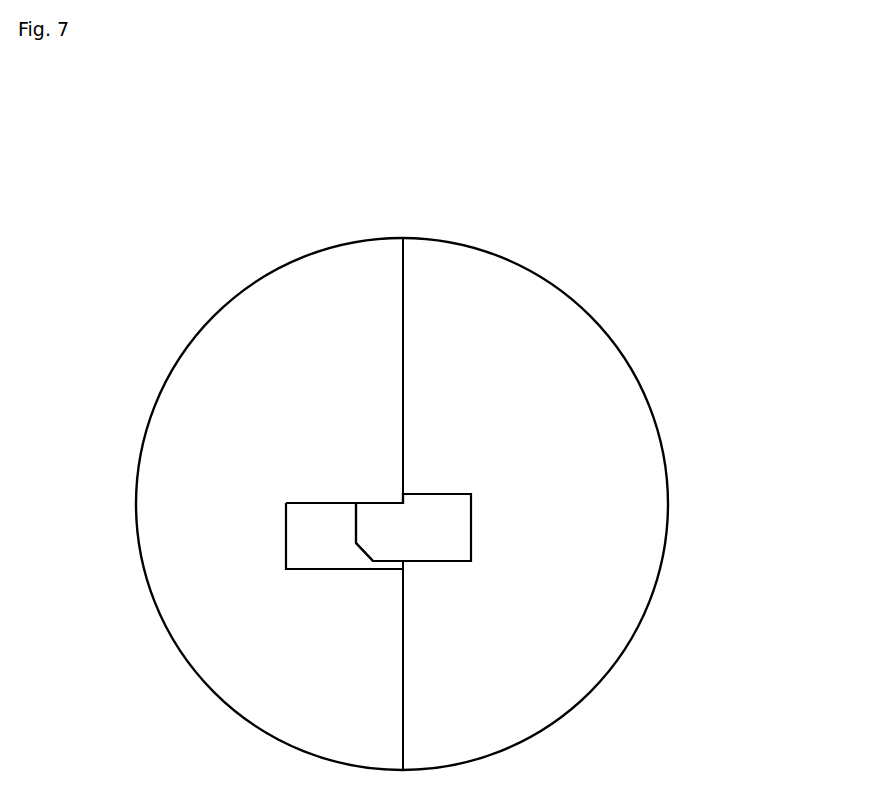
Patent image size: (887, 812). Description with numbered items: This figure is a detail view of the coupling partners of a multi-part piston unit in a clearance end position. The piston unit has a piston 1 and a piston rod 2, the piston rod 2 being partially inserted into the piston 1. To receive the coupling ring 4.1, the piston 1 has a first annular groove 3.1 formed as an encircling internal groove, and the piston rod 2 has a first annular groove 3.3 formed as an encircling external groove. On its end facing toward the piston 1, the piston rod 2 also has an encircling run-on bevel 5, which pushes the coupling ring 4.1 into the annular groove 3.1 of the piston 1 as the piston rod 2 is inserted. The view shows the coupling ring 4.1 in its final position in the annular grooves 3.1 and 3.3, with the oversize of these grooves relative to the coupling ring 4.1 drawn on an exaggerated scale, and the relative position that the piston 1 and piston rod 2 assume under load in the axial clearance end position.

The piston 1 is at (247, 377).
The piston rod 2 is at (563, 387).
The first annular groove of the piston 3.1 is at (337, 567).
The first annular groove of the piston rod 3.3 is at (472, 500).
The coupling ring 4.1 is at (380, 513).
The run-on bevel 5 is at (356, 543).